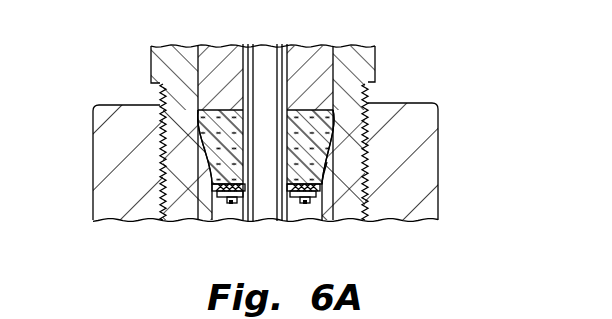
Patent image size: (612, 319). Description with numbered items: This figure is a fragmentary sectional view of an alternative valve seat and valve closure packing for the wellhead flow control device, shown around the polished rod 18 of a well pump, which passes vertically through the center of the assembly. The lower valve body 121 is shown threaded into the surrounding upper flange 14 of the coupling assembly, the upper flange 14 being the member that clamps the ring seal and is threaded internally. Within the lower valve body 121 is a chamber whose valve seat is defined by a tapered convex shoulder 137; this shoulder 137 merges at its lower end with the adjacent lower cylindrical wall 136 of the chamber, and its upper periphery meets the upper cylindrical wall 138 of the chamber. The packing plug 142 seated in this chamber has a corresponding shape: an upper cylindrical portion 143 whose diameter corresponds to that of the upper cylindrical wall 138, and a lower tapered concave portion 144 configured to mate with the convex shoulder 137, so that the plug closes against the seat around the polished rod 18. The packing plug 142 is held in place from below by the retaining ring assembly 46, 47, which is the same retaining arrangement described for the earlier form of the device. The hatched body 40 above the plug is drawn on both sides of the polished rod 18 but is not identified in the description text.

The upper flange 14 is at (85, 198).
The polished rod 18 is at (263, 52).
The body member 40 is at (219, 53).
The retaining ring assembly 46 is at (303, 200).
The retaining ring assembly 47 is at (239, 200).
The lower valve body 121 is at (143, 67).
The lower cylindrical wall 136 is at (212, 210).
The tapered convex shoulder 137 is at (204, 163).
The upper cylindrical wall 138 is at (331, 58).
The packing plug 142 is at (310, 123).
The upper cylindrical portion 143 is at (341, 130).
The lower tapered concave portion 144 is at (327, 163).